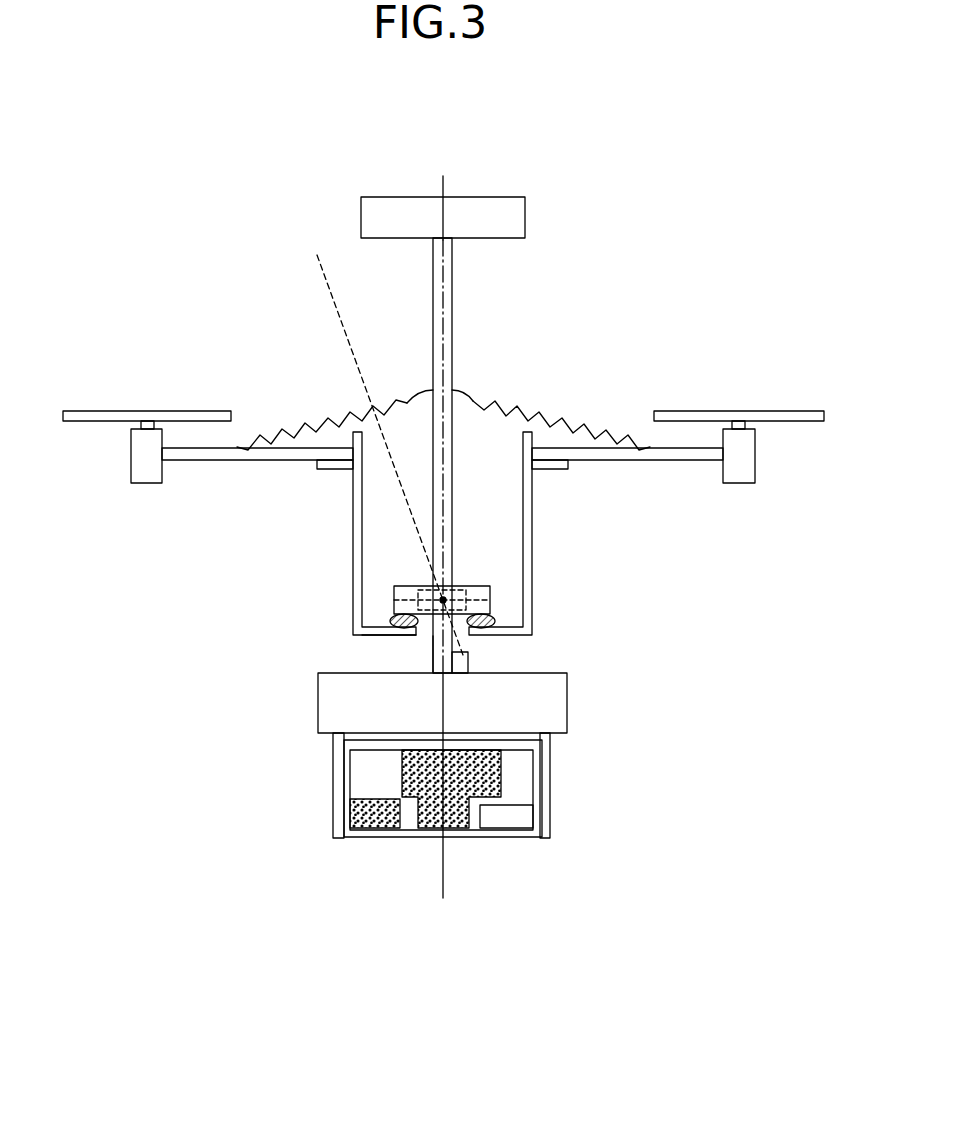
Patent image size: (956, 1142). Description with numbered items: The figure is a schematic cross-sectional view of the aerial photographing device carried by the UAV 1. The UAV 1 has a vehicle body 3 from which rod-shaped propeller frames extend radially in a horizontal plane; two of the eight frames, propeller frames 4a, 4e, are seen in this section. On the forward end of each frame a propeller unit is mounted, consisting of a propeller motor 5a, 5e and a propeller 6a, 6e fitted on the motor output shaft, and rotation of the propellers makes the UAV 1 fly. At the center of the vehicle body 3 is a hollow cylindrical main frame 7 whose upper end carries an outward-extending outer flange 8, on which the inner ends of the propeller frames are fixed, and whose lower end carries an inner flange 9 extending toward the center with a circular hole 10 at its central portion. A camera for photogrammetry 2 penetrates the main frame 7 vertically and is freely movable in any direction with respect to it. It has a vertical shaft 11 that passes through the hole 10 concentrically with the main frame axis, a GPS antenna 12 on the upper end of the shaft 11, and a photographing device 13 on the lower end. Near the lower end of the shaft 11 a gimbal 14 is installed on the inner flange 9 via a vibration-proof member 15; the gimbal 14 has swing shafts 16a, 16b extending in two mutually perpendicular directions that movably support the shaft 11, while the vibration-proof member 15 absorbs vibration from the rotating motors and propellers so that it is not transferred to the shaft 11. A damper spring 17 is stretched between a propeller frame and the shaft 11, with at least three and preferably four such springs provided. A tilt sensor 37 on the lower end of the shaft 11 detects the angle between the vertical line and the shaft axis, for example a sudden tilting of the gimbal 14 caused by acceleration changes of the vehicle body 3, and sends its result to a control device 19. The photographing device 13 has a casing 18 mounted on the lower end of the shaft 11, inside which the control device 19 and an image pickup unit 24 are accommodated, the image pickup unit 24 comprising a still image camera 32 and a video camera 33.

The UAV 1 is at (635, 350).
The camera for photogrammetry 2 is at (405, 333).
The vehicle body 3 is at (352, 513).
The propeller frame 4a is at (217, 462).
The propeller frame 4e is at (647, 462).
The propeller motor 5a is at (138, 483).
The propeller motor 5e is at (755, 461).
The propeller 6a is at (135, 411).
The propeller 6e is at (783, 411).
The main frame 7 is at (533, 565).
The outer flange 8 is at (553, 470).
The inner flange 9 is at (377, 635).
The hole 10 is at (430, 640).
The shaft 11 is at (453, 330).
The GPS antenna 12 is at (505, 197).
The photographing device 13 is at (552, 753).
The gimbal 14 is at (482, 586).
The vibration-proof member 15 is at (392, 620).
The swing shaft 16a is at (418, 590).
The swing shaft 16b is at (466, 597).
The damper spring 17 is at (323, 415).
The casing 18 is at (552, 815).
The control device 19 is at (513, 803).
The image pickup unit 24 is at (420, 852).
The still image camera 32 is at (417, 818).
The video camera 33 is at (365, 830).
The tilt sensor 37 is at (468, 655).